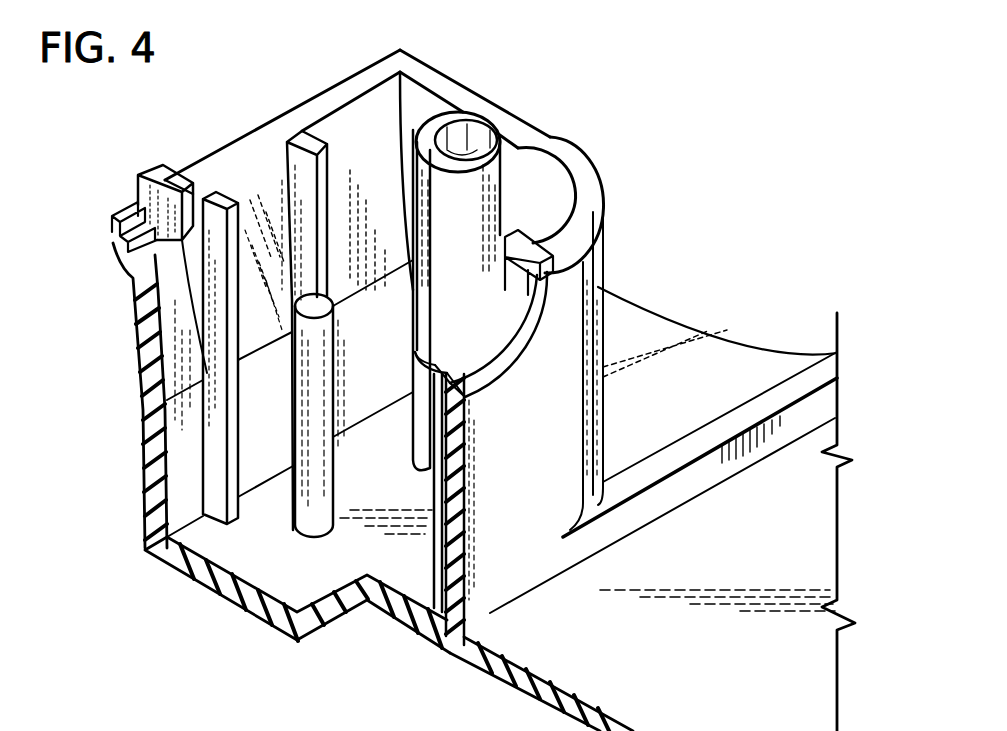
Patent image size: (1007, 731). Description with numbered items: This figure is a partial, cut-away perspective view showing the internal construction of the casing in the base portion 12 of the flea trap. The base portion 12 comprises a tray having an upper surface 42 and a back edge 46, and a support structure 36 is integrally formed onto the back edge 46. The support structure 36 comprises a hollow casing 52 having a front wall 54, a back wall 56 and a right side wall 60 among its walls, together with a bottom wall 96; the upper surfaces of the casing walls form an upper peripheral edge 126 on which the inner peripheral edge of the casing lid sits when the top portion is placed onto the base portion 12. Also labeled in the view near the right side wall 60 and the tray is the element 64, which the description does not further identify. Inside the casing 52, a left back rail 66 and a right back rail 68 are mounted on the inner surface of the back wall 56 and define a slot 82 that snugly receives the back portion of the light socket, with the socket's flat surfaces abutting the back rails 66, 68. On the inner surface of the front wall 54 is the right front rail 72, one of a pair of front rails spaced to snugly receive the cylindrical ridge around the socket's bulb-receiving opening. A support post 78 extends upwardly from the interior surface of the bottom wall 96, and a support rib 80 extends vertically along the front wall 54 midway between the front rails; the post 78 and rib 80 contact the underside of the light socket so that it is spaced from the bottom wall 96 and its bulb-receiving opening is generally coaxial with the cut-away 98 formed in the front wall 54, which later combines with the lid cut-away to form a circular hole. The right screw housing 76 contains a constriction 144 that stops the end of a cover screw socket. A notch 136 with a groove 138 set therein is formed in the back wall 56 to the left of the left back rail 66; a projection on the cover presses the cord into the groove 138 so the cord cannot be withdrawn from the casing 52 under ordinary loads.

The base portion 12 is at (530, 705).
The support structure 36 is at (607, 191).
The upper surface 42 is at (762, 685).
The back edge 46 is at (753, 405).
The hollow casing 52 is at (607, 215).
The front wall 54 is at (500, 527).
The back wall 56 is at (335, 118).
The right side wall 60 is at (530, 180).
The curved surface 64 is at (630, 308).
The left back rail 66 is at (193, 198).
The right back rail 68 is at (247, 180).
The right front rail 72 is at (550, 243).
The right screw housing 76 is at (495, 178).
The support post 78 is at (303, 472).
The support rib 80 is at (437, 482).
The slot 82 is at (238, 172).
The bottom wall 96 is at (267, 570).
The cut-away 98 is at (503, 358).
The upper peripheral edge 126 is at (447, 88).
The notch 136 is at (138, 185).
The groove 138 is at (130, 232).
The constriction 144 is at (477, 147).